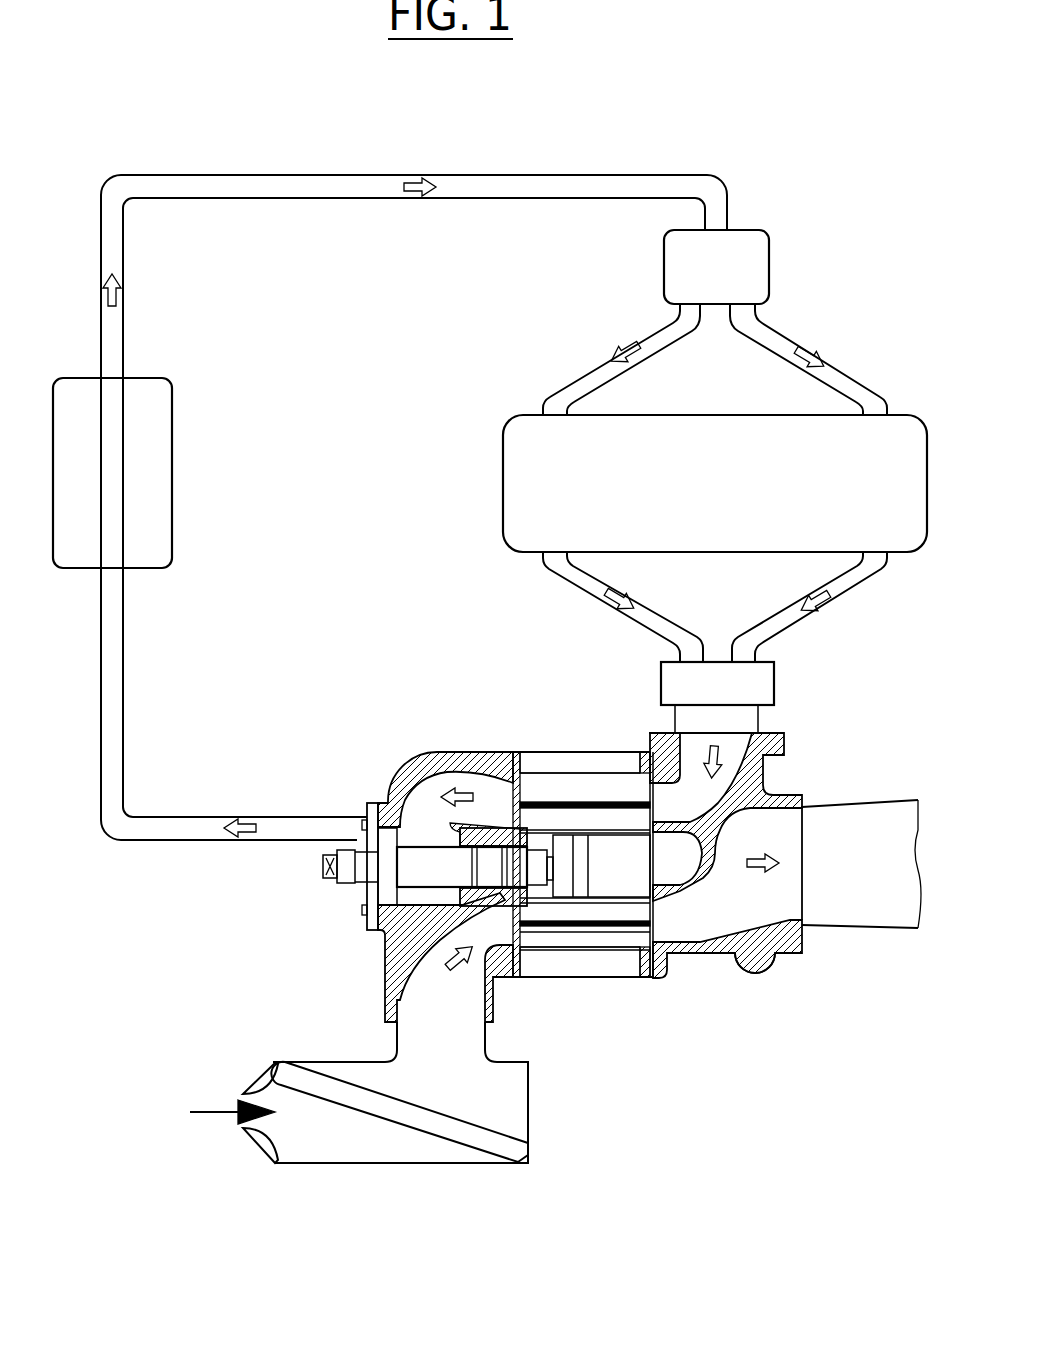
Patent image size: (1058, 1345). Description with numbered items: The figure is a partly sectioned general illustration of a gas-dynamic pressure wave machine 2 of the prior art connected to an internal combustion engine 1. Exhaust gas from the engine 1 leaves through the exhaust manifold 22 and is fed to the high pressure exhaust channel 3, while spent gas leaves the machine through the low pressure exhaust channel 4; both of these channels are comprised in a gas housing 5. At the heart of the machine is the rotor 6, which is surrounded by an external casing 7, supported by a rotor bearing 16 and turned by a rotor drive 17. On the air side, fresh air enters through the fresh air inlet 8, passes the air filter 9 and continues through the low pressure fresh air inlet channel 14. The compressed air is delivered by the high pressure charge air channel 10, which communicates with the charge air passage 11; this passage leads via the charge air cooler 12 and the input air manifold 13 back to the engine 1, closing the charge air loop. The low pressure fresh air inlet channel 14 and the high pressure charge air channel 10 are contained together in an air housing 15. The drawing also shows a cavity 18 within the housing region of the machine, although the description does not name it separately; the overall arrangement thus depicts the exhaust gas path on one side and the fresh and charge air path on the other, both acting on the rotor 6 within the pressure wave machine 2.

The internal combustion engine 1 is at (530, 478).
The gas-dynamic pressure wave machine 2 is at (556, 718).
The high pressure exhaust channel 3 is at (737, 746).
The low pressure exhaust channel 4 is at (718, 918).
The gas housing 5 is at (770, 963).
The rotor 6 is at (620, 985).
The external casing 7 is at (552, 965).
The fresh air inlet 8 is at (217, 1114).
The air filter 9 is at (432, 1122).
The high pressure charge air channel 10 is at (422, 795).
The charge air passage 11 is at (201, 827).
The charge air cooler 12 is at (143, 478).
The input air manifold 13 is at (740, 258).
The low pressure fresh air inlet channel 14 is at (427, 967).
The air housing 15 is at (387, 938).
The rotor bearing 16 is at (495, 813).
The rotor drive 17 is at (343, 838).
The coolant cavity 18 is at (602, 795).
The exhaust manifold 22 is at (738, 682).